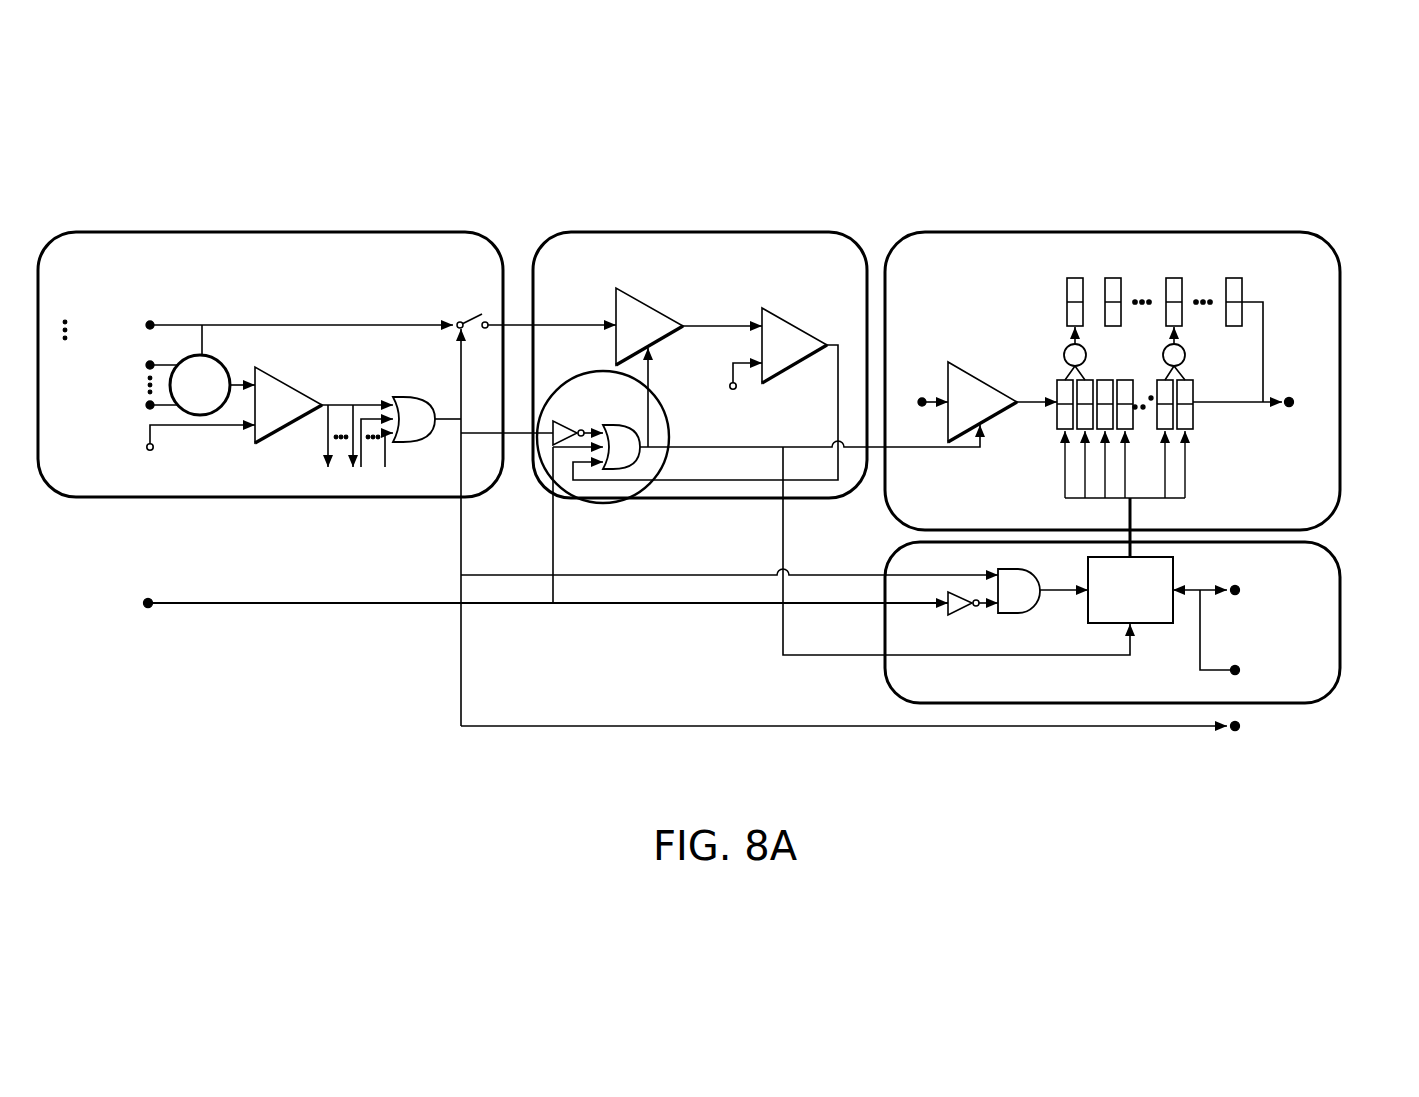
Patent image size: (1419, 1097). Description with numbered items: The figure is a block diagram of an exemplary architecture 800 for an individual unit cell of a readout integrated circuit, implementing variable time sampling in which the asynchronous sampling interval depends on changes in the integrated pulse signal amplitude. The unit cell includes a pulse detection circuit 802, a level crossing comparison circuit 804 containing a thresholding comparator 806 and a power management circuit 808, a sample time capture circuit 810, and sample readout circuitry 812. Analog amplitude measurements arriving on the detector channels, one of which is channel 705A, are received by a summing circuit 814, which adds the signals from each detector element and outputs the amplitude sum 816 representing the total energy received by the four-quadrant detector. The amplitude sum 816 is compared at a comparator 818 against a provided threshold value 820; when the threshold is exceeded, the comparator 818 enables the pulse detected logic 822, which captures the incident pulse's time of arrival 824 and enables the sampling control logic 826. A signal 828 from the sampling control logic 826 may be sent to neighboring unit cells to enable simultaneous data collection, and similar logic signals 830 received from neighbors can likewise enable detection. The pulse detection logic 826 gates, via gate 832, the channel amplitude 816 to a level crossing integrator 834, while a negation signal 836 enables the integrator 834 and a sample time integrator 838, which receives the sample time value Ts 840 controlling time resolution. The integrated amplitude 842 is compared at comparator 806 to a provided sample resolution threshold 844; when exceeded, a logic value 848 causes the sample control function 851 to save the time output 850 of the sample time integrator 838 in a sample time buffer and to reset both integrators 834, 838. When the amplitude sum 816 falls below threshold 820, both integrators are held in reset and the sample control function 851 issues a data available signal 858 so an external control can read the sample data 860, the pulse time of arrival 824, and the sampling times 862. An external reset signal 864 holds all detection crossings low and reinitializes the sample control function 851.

The architecture 800 is at (758, 100).
The pulse detection circuit 802 is at (272, 230).
The level crossing comparison circuit 804 is at (695, 230).
The comparator 806 is at (802, 307).
The power management circuit 808 is at (678, 467).
The sample time capture circuit 810 is at (1115, 230).
The sample readout circuitry 812 is at (1330, 546).
The detector channel 705A is at (245, 354).
The summing circuit 814 is at (216, 312).
The amplitude sum 816 is at (242, 380).
The comparator 818 is at (292, 382).
The threshold value 820 is at (160, 454).
The pulse detected logic 822 is at (341, 403).
The time of arrival 824 is at (465, 505).
The sampling control logic 826 is at (513, 572).
The signal 828 is at (322, 456).
The logic signals 830 is at (386, 456).
The gate 832 is at (461, 321).
The level crossing integrator 834 is at (678, 307).
The negation signal 836 is at (583, 428).
The sample time integrator 838 is at (995, 418).
The sample time value Ts 840 is at (919, 387).
The integrated amplitude 842 is at (733, 322).
The sample resolution threshold 844 is at (762, 403).
The logic value 848 is at (840, 343).
The sample time integrator output 850 is at (1025, 395).
The sample control function 851 is at (1152, 625).
The data available signal 858 is at (1333, 597).
The sample data 860 is at (1333, 677).
The sampling times 862 is at (1326, 428).
The external reset signal 864 is at (113, 613).